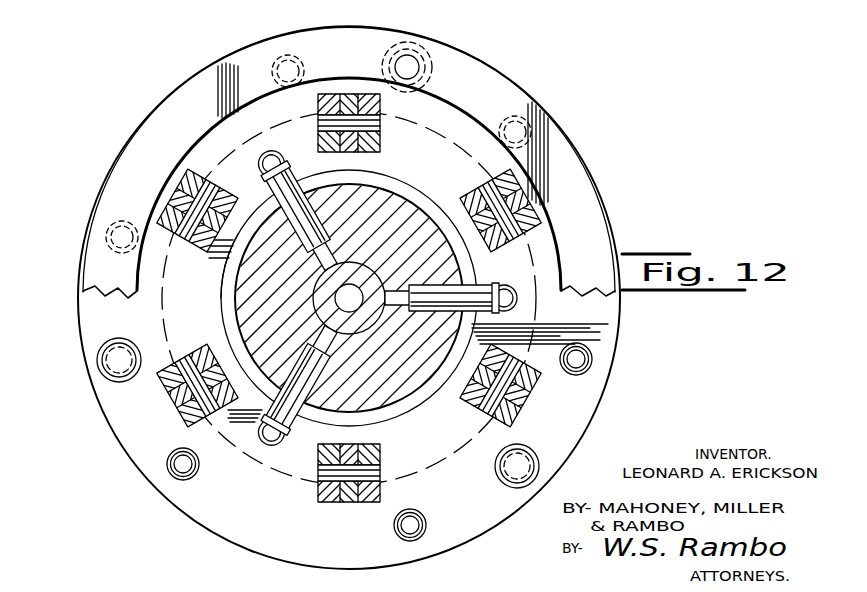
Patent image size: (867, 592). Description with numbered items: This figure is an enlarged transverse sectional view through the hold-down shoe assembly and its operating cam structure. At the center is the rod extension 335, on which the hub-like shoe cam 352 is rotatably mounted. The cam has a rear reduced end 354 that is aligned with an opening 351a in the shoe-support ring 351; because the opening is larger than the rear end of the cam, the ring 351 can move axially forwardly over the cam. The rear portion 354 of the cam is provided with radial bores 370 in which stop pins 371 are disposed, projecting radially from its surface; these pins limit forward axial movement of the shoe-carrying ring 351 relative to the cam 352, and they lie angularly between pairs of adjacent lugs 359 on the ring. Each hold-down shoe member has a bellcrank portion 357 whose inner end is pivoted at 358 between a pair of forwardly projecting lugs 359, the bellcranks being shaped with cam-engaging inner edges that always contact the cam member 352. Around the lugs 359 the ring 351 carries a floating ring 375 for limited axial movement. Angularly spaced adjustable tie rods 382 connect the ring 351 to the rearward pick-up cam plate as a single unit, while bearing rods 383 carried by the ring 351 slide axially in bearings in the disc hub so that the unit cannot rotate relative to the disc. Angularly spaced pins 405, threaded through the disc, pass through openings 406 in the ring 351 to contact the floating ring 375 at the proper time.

The rod extension 335 is at (368, 262).
The shoe-support ring 351 is at (545, 262).
The opening 351a is at (227, 268).
The shoe cam 352 is at (414, 378).
The rear reduced end 354 is at (375, 190).
The bellcrank portion 357 is at (175, 195).
The pivot 358 is at (205, 190).
The lugs 359 is at (477, 192).
The radial bores 370 is at (288, 182).
The stop pins 371 is at (292, 138).
The floating ring 375 is at (508, 104).
The tie rods 382 is at (427, 52).
The bearing rods 383 is at (521, 300).
The pins 405 is at (293, 56).
The openings 406 is at (585, 364).